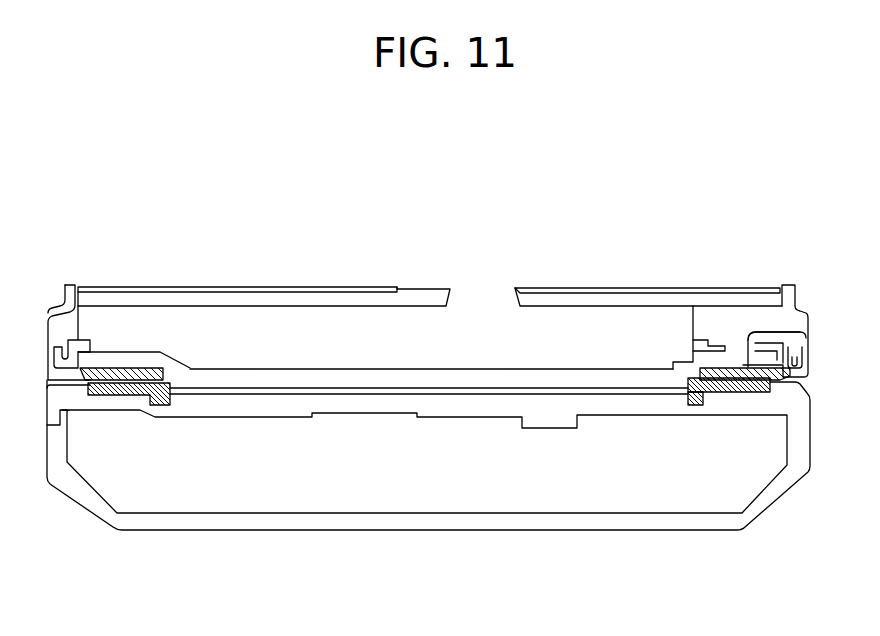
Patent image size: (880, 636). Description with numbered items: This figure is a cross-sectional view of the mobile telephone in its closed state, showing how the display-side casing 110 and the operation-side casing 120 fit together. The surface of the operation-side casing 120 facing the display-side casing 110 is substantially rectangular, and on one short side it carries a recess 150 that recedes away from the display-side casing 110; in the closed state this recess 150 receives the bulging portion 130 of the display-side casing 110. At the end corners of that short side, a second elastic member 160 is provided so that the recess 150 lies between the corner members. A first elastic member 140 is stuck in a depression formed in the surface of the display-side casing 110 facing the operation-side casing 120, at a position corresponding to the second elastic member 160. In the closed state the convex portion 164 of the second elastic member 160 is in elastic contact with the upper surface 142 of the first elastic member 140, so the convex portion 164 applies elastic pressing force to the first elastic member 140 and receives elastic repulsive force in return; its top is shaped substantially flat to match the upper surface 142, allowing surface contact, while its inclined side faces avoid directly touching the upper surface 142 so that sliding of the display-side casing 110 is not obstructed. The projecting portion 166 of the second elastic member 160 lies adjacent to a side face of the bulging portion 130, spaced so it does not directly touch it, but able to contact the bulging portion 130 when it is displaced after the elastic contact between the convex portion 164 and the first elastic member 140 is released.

The display-side casing 110 is at (797, 320).
The operation-side casing 120 is at (773, 496).
The bulging portion 130 is at (615, 395).
The first elastic member 140 is at (806, 331).
The upper surface 142 is at (743, 370).
The recess 150 is at (560, 397).
The second elastic member 160 is at (718, 366).
The convex portion 164 is at (718, 366).
The projecting portion 166 is at (690, 390).